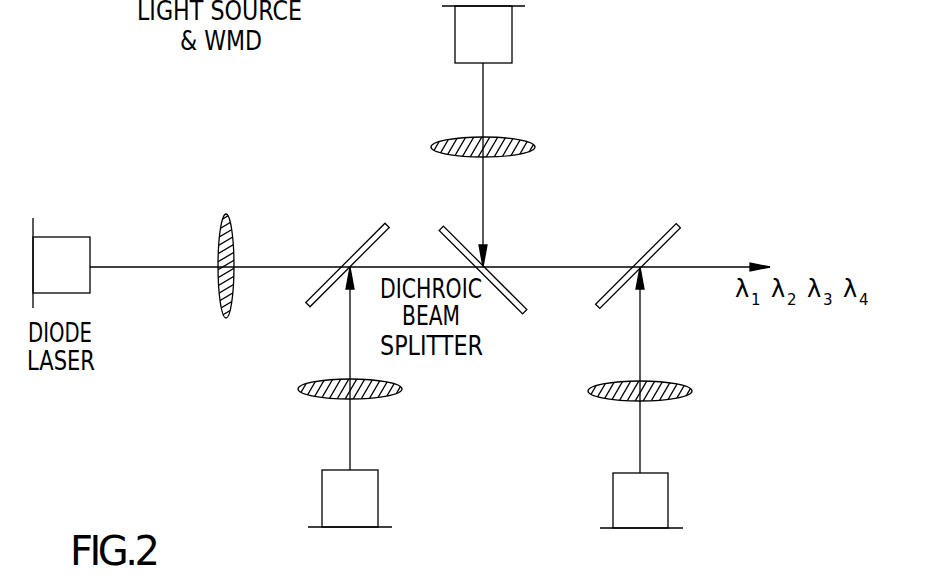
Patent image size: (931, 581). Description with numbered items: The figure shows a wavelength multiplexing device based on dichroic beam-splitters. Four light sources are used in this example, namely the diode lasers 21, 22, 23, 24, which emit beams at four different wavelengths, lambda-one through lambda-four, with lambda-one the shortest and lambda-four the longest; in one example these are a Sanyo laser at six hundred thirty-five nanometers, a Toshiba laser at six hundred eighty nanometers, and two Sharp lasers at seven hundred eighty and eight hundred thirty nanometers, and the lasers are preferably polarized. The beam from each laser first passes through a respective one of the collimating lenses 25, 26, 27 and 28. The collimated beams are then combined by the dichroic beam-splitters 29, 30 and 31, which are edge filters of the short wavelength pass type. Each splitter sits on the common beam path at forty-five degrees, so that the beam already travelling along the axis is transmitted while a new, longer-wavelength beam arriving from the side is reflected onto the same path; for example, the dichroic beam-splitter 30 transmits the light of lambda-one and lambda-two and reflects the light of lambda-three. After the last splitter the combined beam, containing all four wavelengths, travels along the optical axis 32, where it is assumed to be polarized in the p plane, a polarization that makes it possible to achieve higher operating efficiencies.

The diode laser 21 is at (61, 237).
The diode laser 22 is at (380, 503).
The diode laser 23 is at (513, 33).
The diode laser 24 is at (668, 507).
The collimating lens 25 is at (222, 243).
The collimating lens 26 is at (313, 393).
The collimating lens 27 is at (457, 142).
The collimating lens 28 is at (675, 395).
The dichroic beam-splitter 29 is at (362, 243).
The dichroic beam-splitter 30 is at (493, 287).
The dichroic beam-splitter 31 is at (648, 247).
The optical axis 32 is at (693, 267).